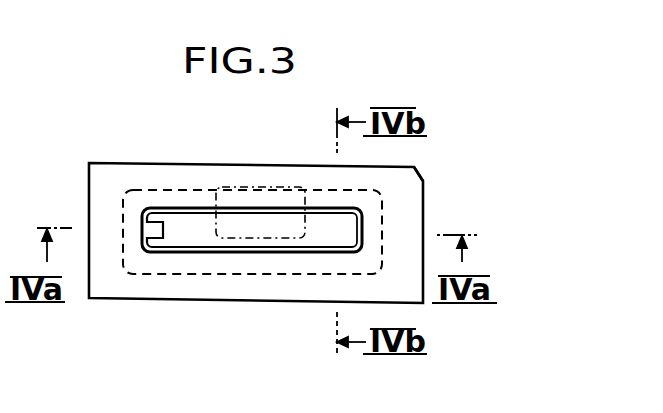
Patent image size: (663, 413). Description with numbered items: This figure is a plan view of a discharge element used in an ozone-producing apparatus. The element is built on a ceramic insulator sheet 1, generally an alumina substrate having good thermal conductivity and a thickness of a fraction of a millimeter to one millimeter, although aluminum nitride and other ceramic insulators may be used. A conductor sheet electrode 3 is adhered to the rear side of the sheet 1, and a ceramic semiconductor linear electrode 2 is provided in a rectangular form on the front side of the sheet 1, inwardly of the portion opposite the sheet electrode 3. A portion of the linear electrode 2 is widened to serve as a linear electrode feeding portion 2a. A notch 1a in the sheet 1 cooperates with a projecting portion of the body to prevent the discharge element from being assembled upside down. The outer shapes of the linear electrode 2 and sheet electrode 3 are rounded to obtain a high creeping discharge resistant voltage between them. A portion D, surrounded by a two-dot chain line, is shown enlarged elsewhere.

The ceramic insulator sheet 1 is at (398, 178).
The notch 1a is at (417, 173).
The linear electrode 2 is at (202, 209).
The linear electrode feeding portion 2a is at (157, 213).
The sheet electrode 3 is at (382, 272).
The portion D is at (287, 187).